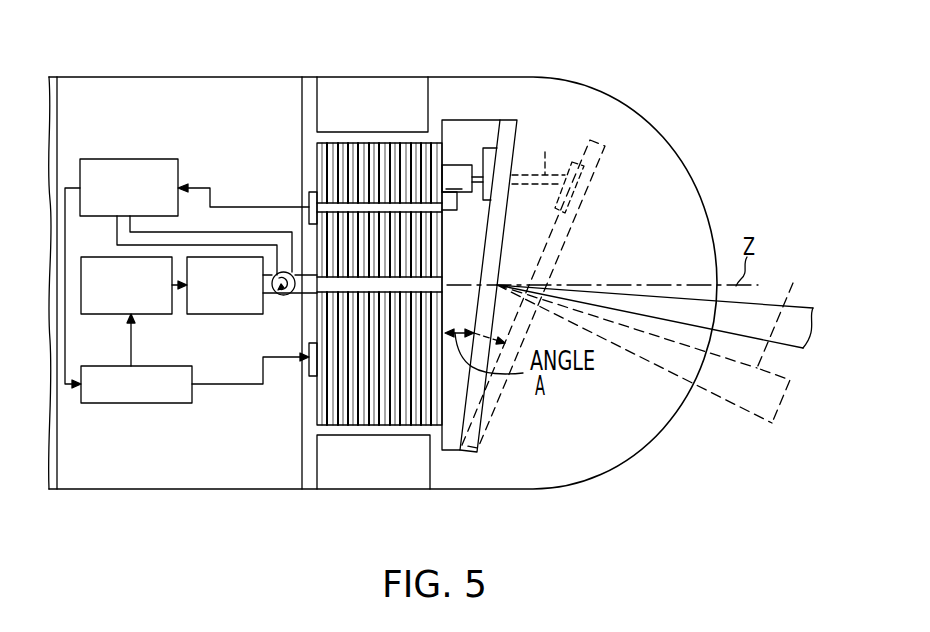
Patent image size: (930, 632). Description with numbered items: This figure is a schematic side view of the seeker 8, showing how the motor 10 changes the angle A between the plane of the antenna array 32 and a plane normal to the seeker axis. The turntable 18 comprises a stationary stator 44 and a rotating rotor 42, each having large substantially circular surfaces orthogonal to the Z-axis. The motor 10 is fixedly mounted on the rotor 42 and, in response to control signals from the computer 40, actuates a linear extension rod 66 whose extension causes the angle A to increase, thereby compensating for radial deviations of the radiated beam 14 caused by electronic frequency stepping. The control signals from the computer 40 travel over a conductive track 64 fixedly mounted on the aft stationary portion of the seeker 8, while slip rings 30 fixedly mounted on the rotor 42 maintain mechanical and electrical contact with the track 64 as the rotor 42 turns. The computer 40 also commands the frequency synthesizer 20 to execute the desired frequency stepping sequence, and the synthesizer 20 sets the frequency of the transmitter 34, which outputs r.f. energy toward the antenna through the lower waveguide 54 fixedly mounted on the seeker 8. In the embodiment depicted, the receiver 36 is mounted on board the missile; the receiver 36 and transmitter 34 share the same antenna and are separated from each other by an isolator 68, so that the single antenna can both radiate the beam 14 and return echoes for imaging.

The seeker 8 is at (91, 73).
The motor 10 is at (467, 165).
The beam 14 is at (793, 306).
The turntable 18 is at (455, 112).
The frequency synthesizer 20 is at (148, 314).
The slip rings 30 is at (309, 195).
The antenna array 32 is at (497, 221).
The transmitter 34 is at (233, 314).
The receiver 36 is at (120, 159).
The computer 40 is at (148, 403).
The rotor 42 is at (381, 143).
The stator 44 is at (358, 115).
The lower waveguide 54 is at (313, 285).
The conductive track 64 is at (309, 200).
The linear extension rod 66 is at (477, 173).
The isolator 68 is at (284, 295).